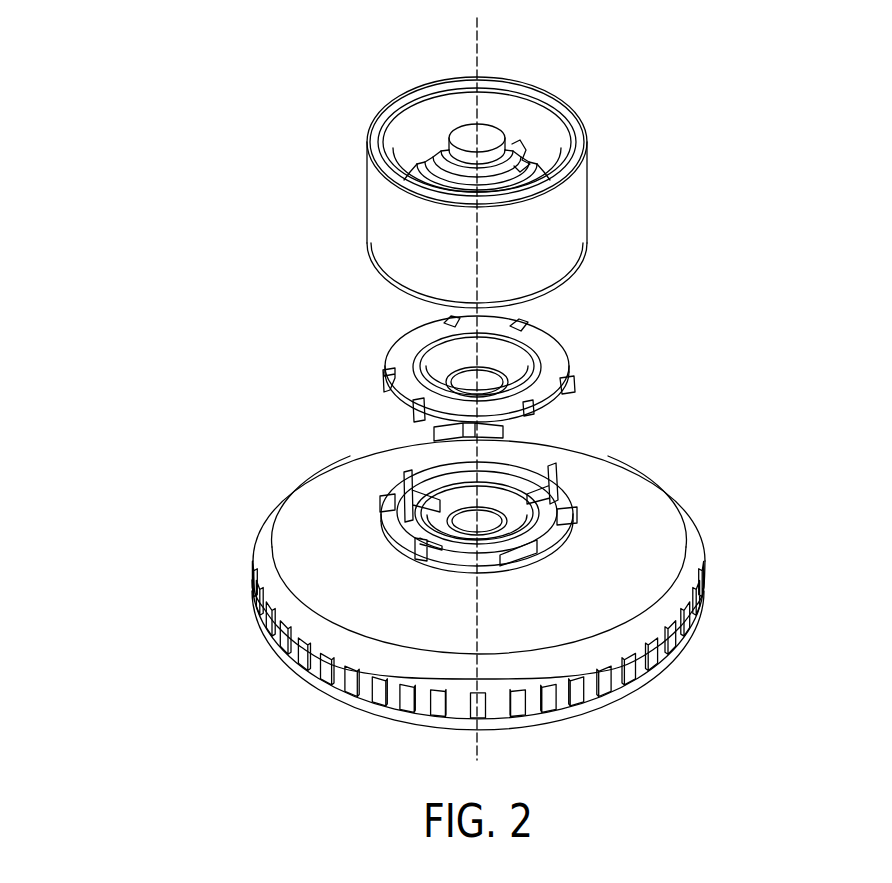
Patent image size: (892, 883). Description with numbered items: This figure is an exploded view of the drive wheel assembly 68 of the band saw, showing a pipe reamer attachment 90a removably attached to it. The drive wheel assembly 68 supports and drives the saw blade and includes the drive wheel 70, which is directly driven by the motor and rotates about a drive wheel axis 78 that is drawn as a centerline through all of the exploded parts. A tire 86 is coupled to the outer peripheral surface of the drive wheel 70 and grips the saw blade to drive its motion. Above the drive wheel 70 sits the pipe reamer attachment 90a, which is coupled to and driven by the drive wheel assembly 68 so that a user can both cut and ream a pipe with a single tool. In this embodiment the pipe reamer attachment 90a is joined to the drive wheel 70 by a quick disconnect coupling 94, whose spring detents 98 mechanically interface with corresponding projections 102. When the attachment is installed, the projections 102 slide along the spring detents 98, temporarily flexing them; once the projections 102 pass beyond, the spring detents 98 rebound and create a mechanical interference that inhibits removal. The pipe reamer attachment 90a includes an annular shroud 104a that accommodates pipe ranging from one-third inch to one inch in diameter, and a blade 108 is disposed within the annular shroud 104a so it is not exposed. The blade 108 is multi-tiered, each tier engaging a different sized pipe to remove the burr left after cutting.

The drive wheel assembly 68 is at (163, 446).
The drive wheel 70 is at (645, 530).
The drive wheel axis 78 is at (479, 46).
The tire 86 is at (703, 608).
The pipe reamer attachment 90a is at (596, 110).
The quick disconnect coupling 94 is at (624, 398).
The spring detents 98 is at (433, 431).
The projections 102 is at (445, 322).
The annular shroud 104a is at (367, 212).
The blade 108 is at (522, 160).